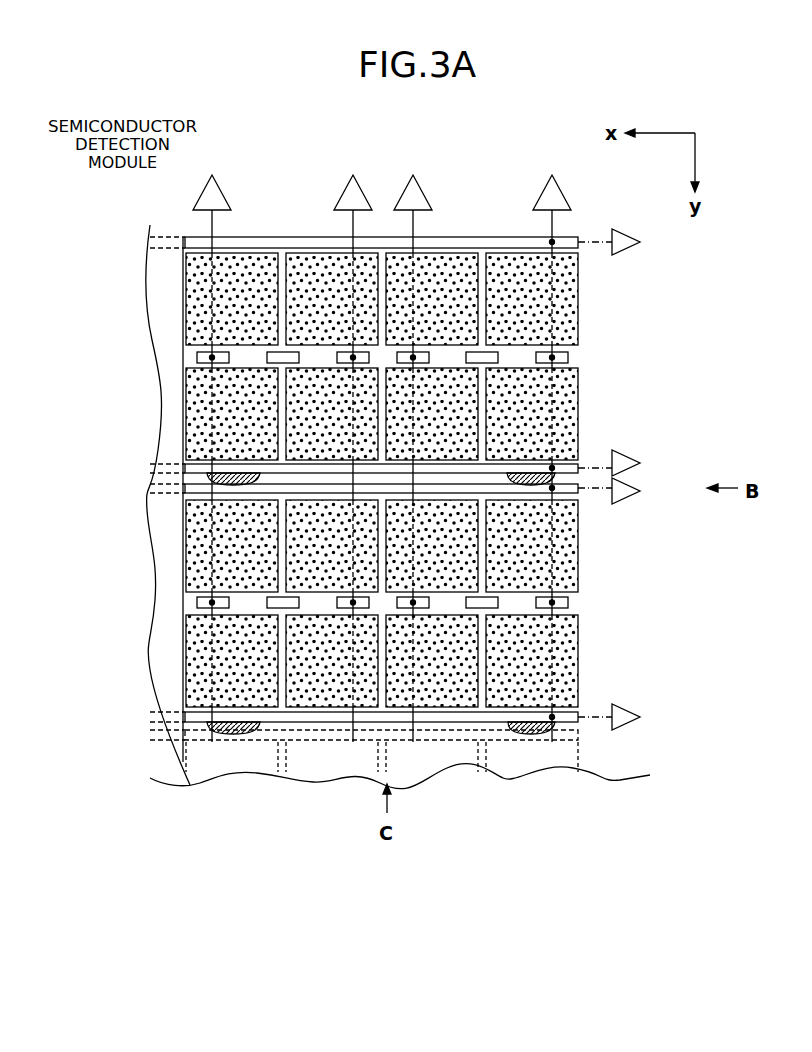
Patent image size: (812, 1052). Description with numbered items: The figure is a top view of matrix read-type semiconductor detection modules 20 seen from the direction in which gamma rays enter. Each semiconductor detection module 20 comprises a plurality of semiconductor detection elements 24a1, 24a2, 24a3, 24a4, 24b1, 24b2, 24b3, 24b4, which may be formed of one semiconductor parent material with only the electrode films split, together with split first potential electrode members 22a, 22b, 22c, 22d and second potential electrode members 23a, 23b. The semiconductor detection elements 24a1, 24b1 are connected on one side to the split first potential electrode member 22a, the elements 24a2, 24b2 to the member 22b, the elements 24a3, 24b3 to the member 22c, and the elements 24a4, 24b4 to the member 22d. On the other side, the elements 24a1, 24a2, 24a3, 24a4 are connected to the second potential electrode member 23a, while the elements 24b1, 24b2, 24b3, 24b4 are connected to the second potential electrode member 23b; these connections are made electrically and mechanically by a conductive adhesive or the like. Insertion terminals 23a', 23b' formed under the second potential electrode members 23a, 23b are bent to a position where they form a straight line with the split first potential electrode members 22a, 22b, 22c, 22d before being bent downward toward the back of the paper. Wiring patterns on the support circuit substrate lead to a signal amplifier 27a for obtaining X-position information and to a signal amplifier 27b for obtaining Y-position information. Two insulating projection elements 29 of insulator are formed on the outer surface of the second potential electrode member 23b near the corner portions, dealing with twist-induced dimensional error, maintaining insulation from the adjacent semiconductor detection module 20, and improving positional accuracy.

The semiconductor detection module 20 is at (187, 219).
The split first potential electrode member 22a is at (197, 357).
The split first potential electrode member 22b is at (337, 356).
The split first potential electrode member 22c is at (425, 357).
The split first potential electrode member 22d is at (570, 357).
The second potential electrode member 23a is at (414, 369).
The insertion terminal 23a' is at (522, 513).
The second potential electrode member 23b is at (416, 597).
The insertion terminal 23b' is at (176, 476).
The semiconductor detection element 24a1 is at (195, 283).
The semiconductor detection element 24a2 is at (298, 265).
The semiconductor detection element 24a3 is at (396, 270).
The semiconductor detection element 24a4 is at (558, 282).
The semiconductor detection element 24b1 is at (200, 385).
The semiconductor detection element 24b2 is at (320, 413).
The semiconductor detection element 24b3 is at (453, 410).
The semiconductor detection element 24b4 is at (560, 382).
The signal amplifier 27a is at (224, 164).
The signal amplifier 27b is at (641, 243).
The insulating projection element 29 is at (232, 472).